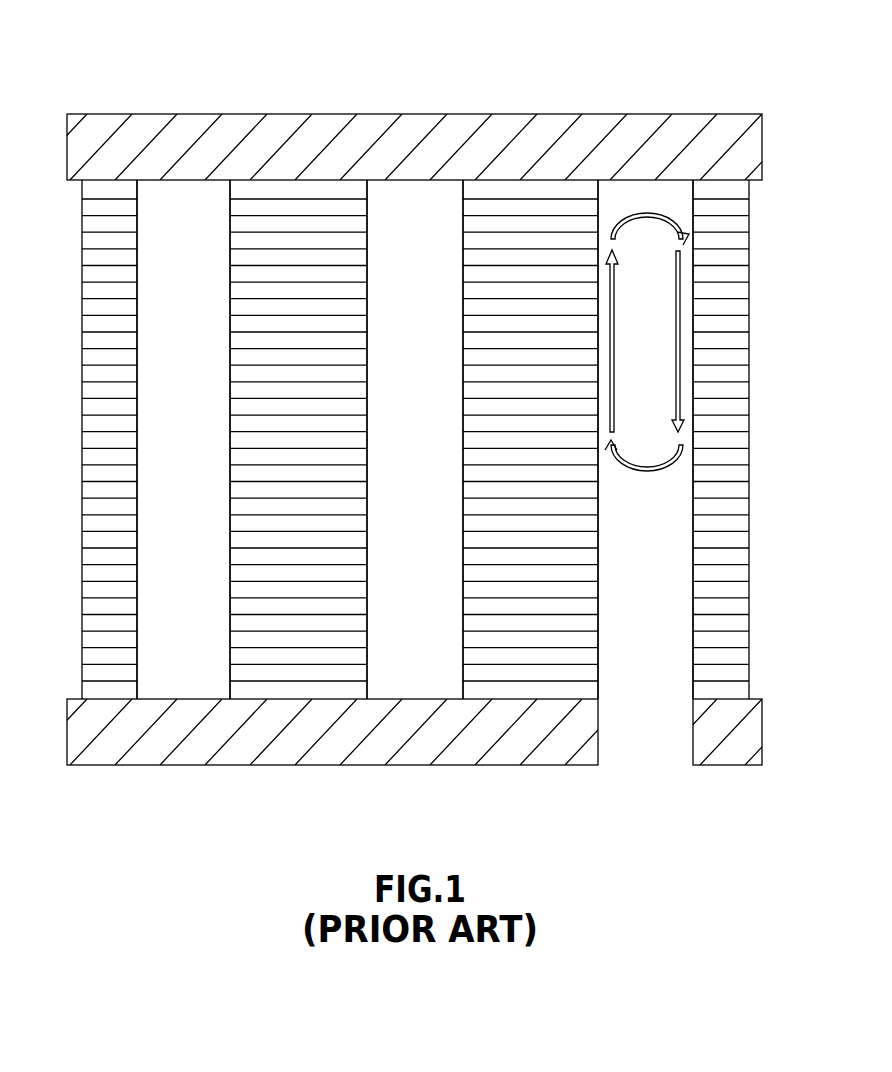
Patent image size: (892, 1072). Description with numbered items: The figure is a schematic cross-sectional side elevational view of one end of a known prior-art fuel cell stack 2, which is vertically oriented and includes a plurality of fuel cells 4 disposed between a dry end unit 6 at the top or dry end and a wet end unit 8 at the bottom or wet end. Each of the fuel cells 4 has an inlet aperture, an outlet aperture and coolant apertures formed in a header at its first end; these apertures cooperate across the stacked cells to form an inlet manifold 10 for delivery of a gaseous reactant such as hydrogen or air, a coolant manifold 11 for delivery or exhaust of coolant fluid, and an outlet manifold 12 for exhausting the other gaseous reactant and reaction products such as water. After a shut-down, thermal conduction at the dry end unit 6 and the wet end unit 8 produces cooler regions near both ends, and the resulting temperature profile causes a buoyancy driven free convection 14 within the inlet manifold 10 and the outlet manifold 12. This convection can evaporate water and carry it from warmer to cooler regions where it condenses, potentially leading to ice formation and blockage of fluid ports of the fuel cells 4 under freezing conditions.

The fuel cell stack 2 is at (113, 63).
The fuel cells 4 is at (82, 325).
The dry end unit 6 is at (413, 114).
The wet end unit 8 is at (405, 765).
The inlet manifold 10 is at (201, 359).
The coolant manifold 11 is at (428, 476).
The outlet manifold 12 is at (659, 601).
The buoyancy driven free convection 14 is at (676, 331).